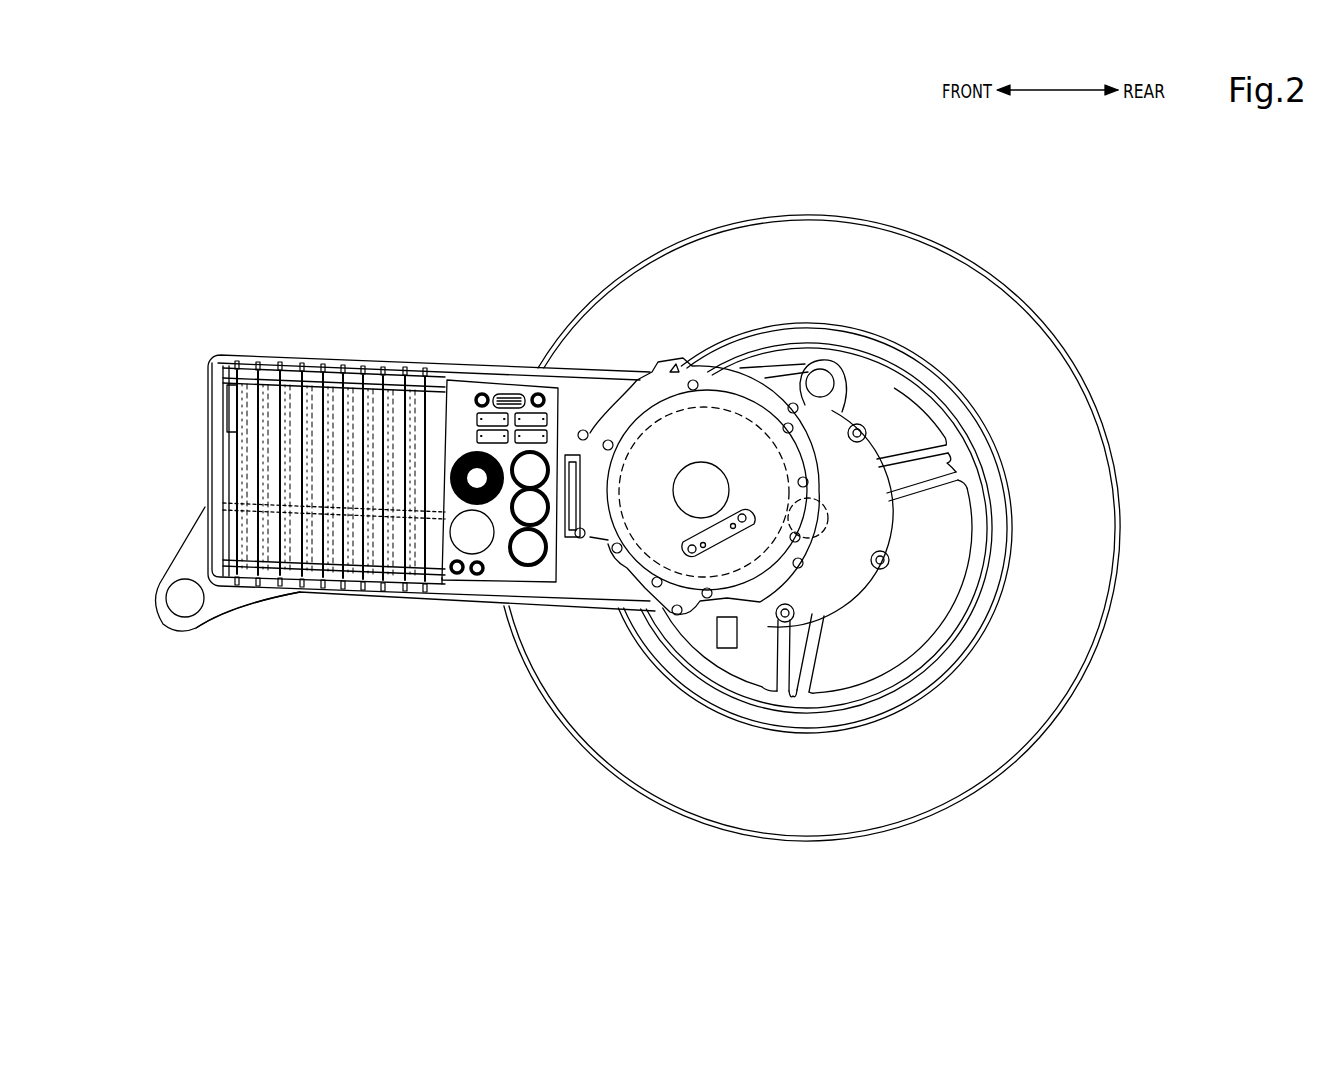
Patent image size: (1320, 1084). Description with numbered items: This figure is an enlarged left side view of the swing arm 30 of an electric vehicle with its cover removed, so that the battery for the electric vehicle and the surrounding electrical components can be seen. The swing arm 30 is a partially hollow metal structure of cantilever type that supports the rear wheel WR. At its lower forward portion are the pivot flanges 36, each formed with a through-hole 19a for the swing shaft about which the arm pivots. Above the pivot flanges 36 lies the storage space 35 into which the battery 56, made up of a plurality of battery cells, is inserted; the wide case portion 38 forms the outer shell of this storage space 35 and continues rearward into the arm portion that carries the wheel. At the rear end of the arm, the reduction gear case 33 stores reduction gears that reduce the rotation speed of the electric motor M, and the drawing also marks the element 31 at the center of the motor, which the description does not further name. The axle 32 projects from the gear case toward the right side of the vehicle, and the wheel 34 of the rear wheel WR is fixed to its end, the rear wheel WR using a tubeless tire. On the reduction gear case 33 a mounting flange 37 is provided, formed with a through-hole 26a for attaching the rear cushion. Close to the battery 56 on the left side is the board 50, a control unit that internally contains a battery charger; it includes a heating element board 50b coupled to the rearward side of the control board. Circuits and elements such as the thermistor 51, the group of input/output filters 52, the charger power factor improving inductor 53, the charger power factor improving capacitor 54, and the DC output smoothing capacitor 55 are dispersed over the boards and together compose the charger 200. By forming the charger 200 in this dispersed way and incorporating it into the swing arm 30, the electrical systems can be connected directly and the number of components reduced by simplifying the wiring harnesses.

The through-hole 19a is at (187, 602).
The through-hole 26a is at (823, 380).
The swing arm 30 is at (287, 285).
The output shaft 31 is at (700, 482).
The axle 32 is at (808, 540).
The reduction gear case 33 is at (880, 523).
The wheel 34 is at (940, 625).
The storage space 35 is at (362, 362).
The pivot flange 36 is at (222, 602).
The mounting flange 37 is at (793, 390).
The wide case portion 38 is at (257, 352).
The board 50 is at (435, 582).
The heating element board 50b is at (498, 575).
The thermistor 51 is at (508, 398).
The group of input/output filters 52 is at (469, 414).
The charger power factor improving inductor 53 is at (452, 468).
The charger power factor improving capacitor 54 is at (471, 540).
The DC output smoothing capacitor 55 is at (528, 580).
The battery 56 is at (343, 572).
The charger 200 is at (493, 324).
The electric motor M is at (688, 395).
The rear wheel WR is at (968, 775).